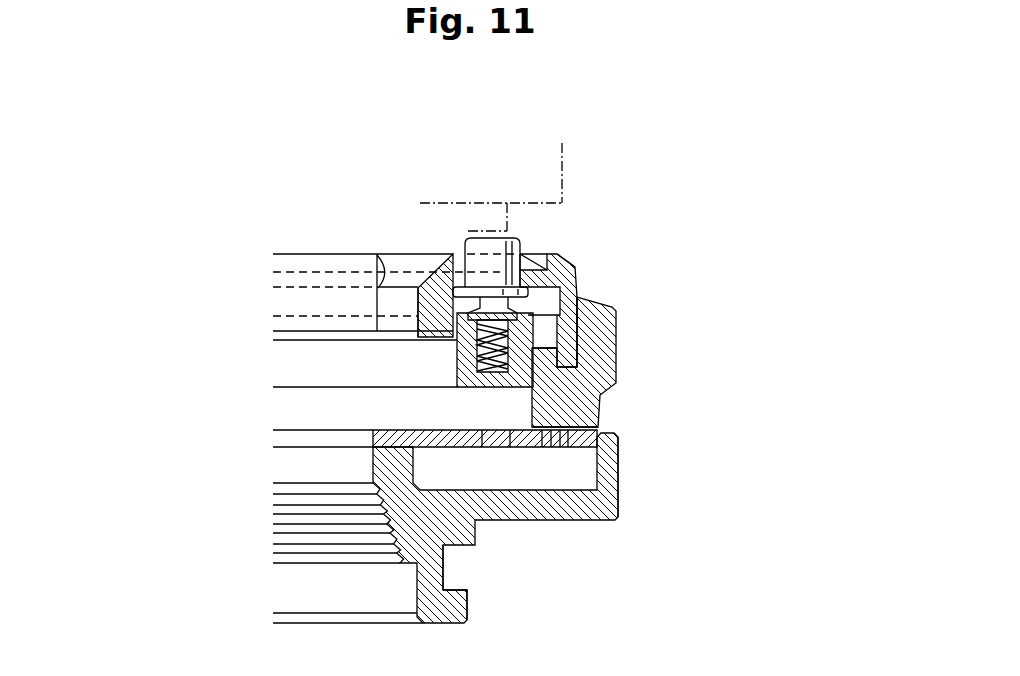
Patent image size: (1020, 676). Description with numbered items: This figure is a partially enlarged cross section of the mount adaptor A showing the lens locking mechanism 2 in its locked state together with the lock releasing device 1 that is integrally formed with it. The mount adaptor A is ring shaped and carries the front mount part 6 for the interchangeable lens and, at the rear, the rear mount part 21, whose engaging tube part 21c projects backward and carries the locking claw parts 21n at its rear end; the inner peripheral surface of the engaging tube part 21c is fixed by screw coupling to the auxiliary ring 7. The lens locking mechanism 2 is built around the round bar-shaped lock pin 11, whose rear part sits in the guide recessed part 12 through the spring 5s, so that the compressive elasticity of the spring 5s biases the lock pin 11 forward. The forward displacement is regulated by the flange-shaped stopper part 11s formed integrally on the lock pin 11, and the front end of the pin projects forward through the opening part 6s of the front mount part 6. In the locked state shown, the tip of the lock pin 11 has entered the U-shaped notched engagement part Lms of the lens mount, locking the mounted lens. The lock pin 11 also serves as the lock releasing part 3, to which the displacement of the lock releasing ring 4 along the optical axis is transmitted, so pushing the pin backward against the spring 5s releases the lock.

The front mount part 6 is at (346, 243).
The opening part 6s is at (468, 232).
The lens locking mechanism 2 is at (488, 226).
The notched engagement part Lms is at (468, 232).
The lock pin 11 is at (520, 243).
The lock releasing ring 4 is at (575, 265).
The lock releasing part 3 is at (531, 297).
The lock releasing device 1 is at (601, 290).
The stopper part 11s is at (425, 302).
The auxiliary ring 7 is at (618, 350).
The spring 5s is at (500, 391).
The guide recessed part 12 is at (462, 391).
The mount adaptor A is at (636, 476).
The rear mount part 21 is at (551, 538).
The engaging tube part 21c is at (445, 573).
The locking claw part 21n is at (468, 603).